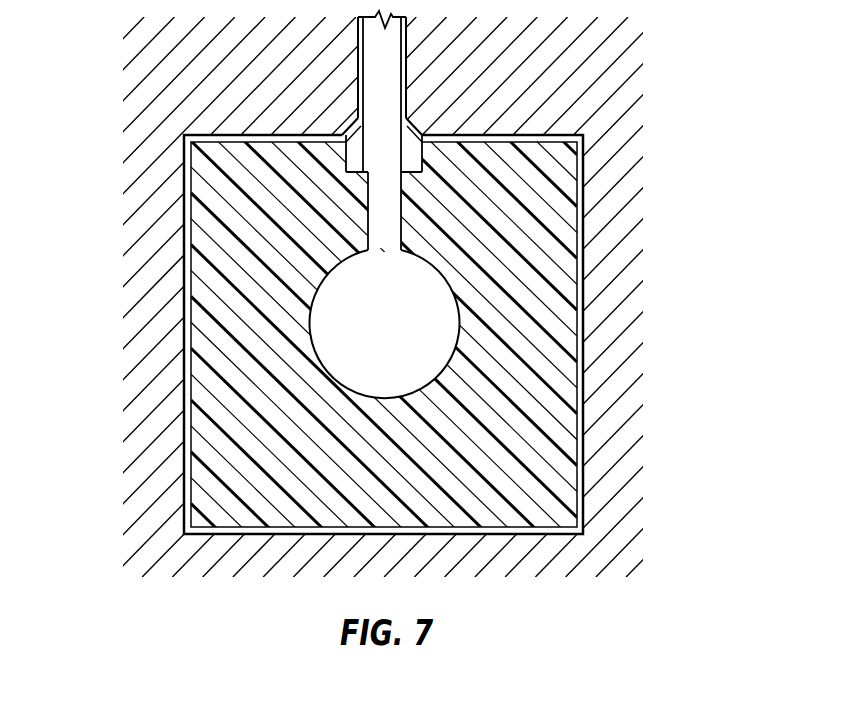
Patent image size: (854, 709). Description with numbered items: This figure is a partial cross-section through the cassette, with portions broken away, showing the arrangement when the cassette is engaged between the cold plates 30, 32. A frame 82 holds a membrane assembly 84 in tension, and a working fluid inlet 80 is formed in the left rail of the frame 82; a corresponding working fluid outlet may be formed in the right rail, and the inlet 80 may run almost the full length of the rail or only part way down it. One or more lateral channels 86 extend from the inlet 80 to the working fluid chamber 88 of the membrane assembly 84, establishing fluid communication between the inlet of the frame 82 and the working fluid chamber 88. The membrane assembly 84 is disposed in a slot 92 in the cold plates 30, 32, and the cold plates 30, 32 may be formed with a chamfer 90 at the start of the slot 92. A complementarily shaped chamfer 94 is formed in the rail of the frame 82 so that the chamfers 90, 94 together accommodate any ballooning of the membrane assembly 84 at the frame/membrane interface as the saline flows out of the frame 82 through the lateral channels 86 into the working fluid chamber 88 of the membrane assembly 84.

The cold plate 30 is at (627, 242).
The cold plate 32 is at (147, 242).
The working fluid inlet 80 is at (422, 305).
The frame 82 is at (543, 367).
The membrane assembly 84 is at (400, 50).
The lateral channel 86 is at (382, 190).
The working fluid chamber 88 is at (392, 87).
The chamfer 90 is at (350, 122).
The slot 92 is at (358, 52).
The chamfer 94 is at (408, 120).